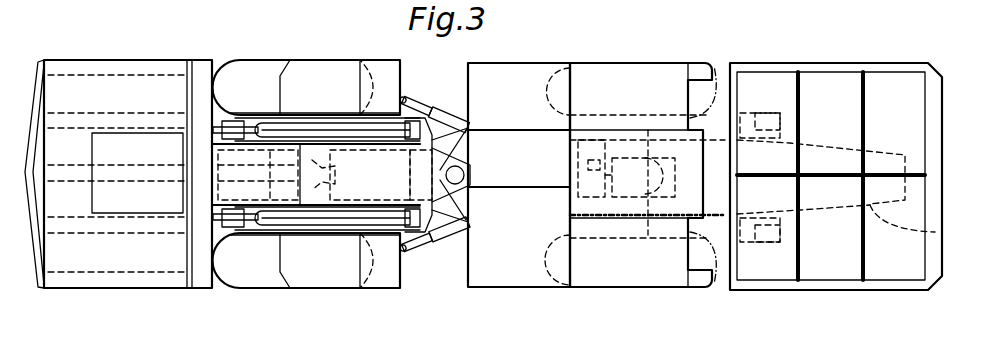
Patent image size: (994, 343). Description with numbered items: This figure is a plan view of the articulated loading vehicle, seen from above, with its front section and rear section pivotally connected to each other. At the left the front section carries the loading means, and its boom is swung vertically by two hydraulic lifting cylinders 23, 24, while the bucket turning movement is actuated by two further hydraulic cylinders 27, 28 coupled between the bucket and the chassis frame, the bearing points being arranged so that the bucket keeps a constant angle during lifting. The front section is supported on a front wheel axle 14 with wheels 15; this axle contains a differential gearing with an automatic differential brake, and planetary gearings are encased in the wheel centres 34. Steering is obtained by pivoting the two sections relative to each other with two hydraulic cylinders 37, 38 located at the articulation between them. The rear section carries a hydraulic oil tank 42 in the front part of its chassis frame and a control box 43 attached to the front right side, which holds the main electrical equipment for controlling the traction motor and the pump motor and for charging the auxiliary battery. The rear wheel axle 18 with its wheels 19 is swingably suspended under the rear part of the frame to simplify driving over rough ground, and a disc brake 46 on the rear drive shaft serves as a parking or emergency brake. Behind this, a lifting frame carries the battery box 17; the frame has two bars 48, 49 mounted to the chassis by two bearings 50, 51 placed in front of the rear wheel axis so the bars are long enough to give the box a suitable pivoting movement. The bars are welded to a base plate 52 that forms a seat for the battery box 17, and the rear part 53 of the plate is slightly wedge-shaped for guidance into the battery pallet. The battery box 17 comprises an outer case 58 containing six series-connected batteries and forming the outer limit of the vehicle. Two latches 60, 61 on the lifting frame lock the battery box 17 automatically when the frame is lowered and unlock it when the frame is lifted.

The front wheel axle 14 is at (282, 238).
The wheels 15 is at (321, 57).
The battery box 17 is at (866, 85).
The rear wheel axle 18 is at (605, 148).
The wheels 19 is at (450, 100).
The hydraulic lifting cylinder 23 is at (243, 237).
The hydraulic lifting cylinder 24 is at (255, 113).
The hydraulic cylinder 27 is at (387, 220).
The hydraulic cylinder 28 is at (378, 132).
The wheel centres 34 is at (146, 144).
The hydraulic cylinder 37 is at (445, 232).
The hydraulic cylinder 38 is at (448, 95).
The hydraulic oil tank 42 is at (522, 130).
The control box 43 is at (505, 52).
The disc brake 46 is at (574, 290).
The bar 48 is at (706, 232).
The bar 49 is at (683, 135).
The bearing 50 is at (590, 240).
The bearing 51 is at (607, 290).
The base plate 52 is at (800, 230).
The rear part of the plate 53 is at (935, 232).
The outer case 58 is at (936, 105).
The latch 60 is at (757, 242).
The latch 61 is at (746, 115).